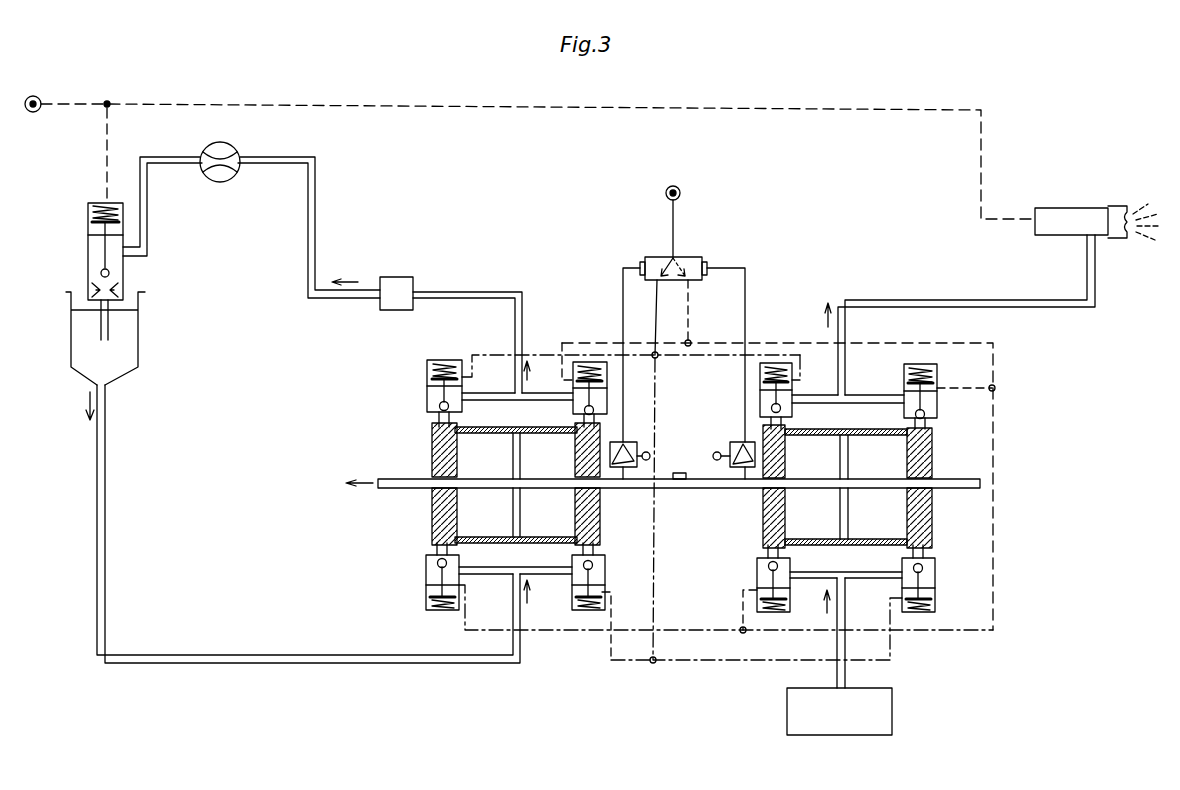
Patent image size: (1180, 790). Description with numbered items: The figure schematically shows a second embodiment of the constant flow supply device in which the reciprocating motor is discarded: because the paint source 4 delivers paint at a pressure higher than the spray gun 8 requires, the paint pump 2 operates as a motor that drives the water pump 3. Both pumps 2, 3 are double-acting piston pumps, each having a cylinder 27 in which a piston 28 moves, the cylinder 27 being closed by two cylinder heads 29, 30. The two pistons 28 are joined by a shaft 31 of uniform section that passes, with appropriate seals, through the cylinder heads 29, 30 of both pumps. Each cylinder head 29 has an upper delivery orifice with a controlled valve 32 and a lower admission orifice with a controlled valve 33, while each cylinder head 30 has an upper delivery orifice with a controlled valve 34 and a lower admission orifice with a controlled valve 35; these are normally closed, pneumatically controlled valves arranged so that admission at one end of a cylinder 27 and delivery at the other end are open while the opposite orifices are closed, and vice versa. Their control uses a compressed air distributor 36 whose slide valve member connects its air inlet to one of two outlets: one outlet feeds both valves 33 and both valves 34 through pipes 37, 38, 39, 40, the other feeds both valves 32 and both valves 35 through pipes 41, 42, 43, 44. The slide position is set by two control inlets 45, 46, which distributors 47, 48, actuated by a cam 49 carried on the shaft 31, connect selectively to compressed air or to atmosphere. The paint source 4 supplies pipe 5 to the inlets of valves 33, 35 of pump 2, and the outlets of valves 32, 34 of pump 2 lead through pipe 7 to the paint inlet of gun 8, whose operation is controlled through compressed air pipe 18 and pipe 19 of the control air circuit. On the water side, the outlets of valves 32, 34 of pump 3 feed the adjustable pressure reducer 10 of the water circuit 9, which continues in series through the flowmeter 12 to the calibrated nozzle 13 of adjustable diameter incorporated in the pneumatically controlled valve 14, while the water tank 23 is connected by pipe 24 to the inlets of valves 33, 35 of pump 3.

The paint pump 2 is at (941, 518).
The water pump 3 is at (420, 516).
The paint source 4 is at (839, 711).
The pipe 5 is at (835, 672).
The pipe 7 is at (981, 300).
The spray gun 8 is at (1062, 212).
The circuit 9 is at (335, 259).
The adjustable pressure reducer 10 is at (398, 284).
The flowmeter 12 is at (222, 146).
The calibrated nozzle 13 is at (122, 291).
The controlled valve 14 is at (86, 215).
The compressed air pipe 18 is at (281, 109).
The compressed air pipe 19 is at (106, 135).
The water tank 23 is at (139, 354).
The pipe 24 is at (287, 655).
The cylinder 27 is at (556, 427).
The piston 28 is at (512, 465).
The cylinder head 29 is at (600, 510).
The cylinder head 30 is at (430, 450).
The shaft 31 is at (380, 478).
The controlled valve 32 is at (606, 394).
The controlled valve 33 is at (604, 572).
The controlled valve 34 is at (425, 378).
The controlled valve 35 is at (424, 573).
The compressed air distributor 36 is at (662, 257).
The pipe 37 is at (653, 330).
The pipe 38 is at (612, 603).
The pipe 39 is at (735, 362).
The pipe 40 is at (488, 355).
The pipe 41 is at (692, 332).
The pipe 42 is at (565, 342).
The pipe 43 is at (968, 388).
The pipe 44 is at (742, 612).
The compressed air inlet 45 is at (620, 284).
The compressed air inlet 46 is at (748, 284).
The distributor 47 is at (626, 442).
The distributor 48 is at (737, 450).
The cam 49 is at (678, 490).